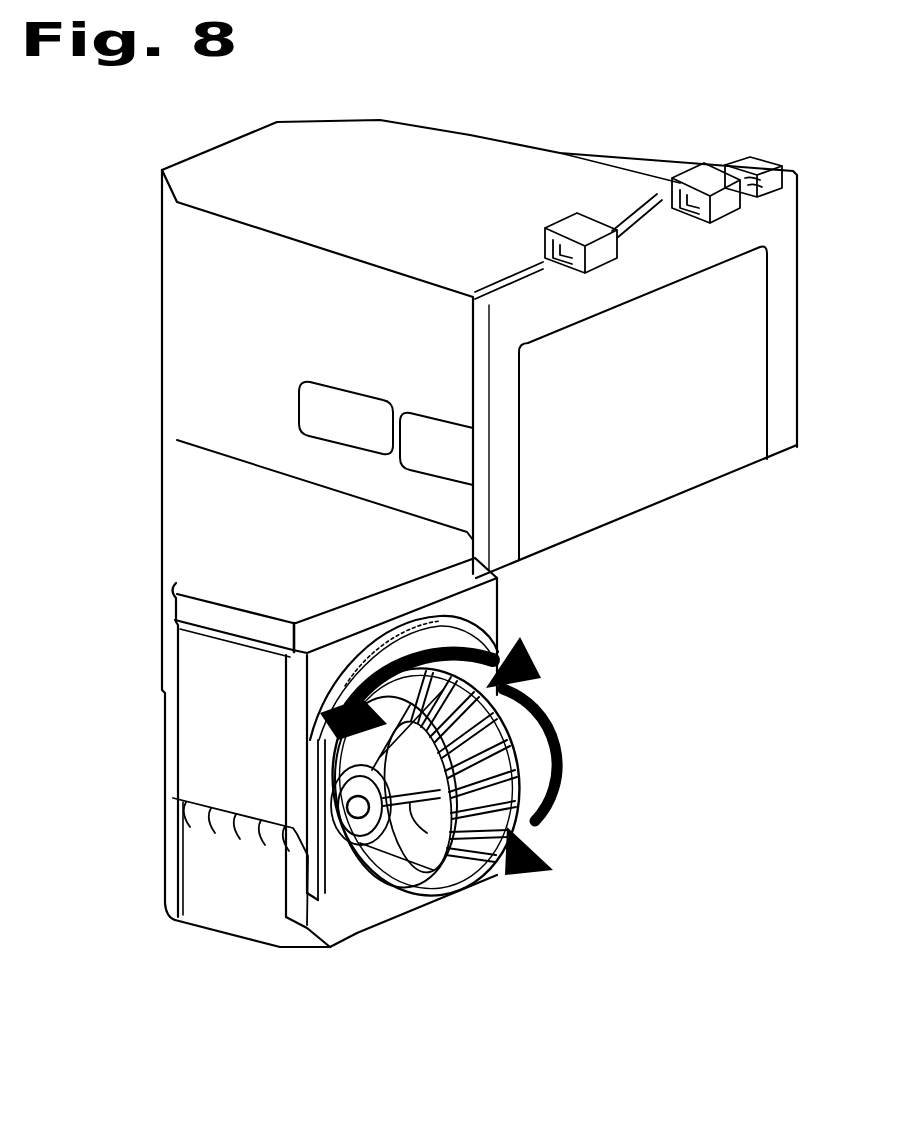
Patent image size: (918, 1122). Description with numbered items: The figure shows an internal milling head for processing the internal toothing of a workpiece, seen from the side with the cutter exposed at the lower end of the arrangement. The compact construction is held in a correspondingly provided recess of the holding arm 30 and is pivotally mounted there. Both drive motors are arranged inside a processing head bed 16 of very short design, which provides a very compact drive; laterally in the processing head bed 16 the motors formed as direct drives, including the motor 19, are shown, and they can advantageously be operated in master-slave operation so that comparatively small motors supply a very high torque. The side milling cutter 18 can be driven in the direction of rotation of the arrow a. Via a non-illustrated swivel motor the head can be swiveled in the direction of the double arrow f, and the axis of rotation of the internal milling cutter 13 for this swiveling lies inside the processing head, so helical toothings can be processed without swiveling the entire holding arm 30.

The holding arm 30 is at (485, 181).
The side milling cutter 18 is at (520, 748).
The internal milling cutter 13 is at (460, 868).
The processing head bed 16 is at (416, 805).
The motor 19 is at (358, 828).
The double arrow f is at (432, 668).
The arrow a is at (545, 782).